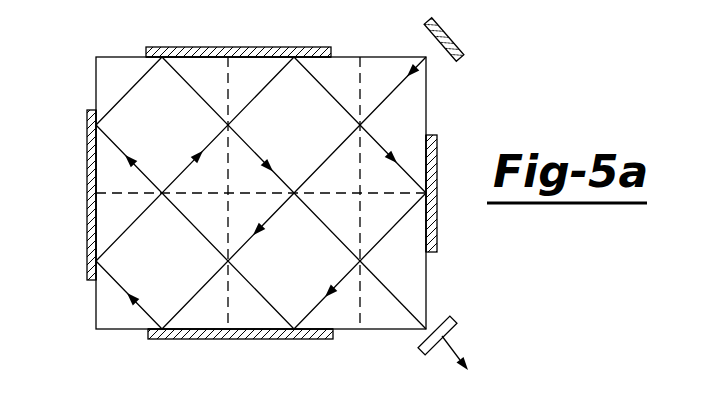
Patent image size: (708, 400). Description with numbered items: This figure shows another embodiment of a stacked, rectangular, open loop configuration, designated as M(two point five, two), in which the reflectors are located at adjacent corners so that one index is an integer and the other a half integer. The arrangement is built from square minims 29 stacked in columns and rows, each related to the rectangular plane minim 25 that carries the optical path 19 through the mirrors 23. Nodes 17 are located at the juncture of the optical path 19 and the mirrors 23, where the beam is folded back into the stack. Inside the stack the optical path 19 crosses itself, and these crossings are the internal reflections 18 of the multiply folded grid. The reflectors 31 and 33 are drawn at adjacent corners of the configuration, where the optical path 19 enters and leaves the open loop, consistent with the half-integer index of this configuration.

The nodes 17 is at (168, 54).
The internal reflections 18 is at (320, 108).
The optical path 19 is at (403, 297).
The mirrors 23 is at (238, 50).
The plane minim 25 is at (405, 122).
The square minims 29 is at (112, 312).
The input mirror 31 is at (457, 53).
The output mirror 33 is at (452, 332).